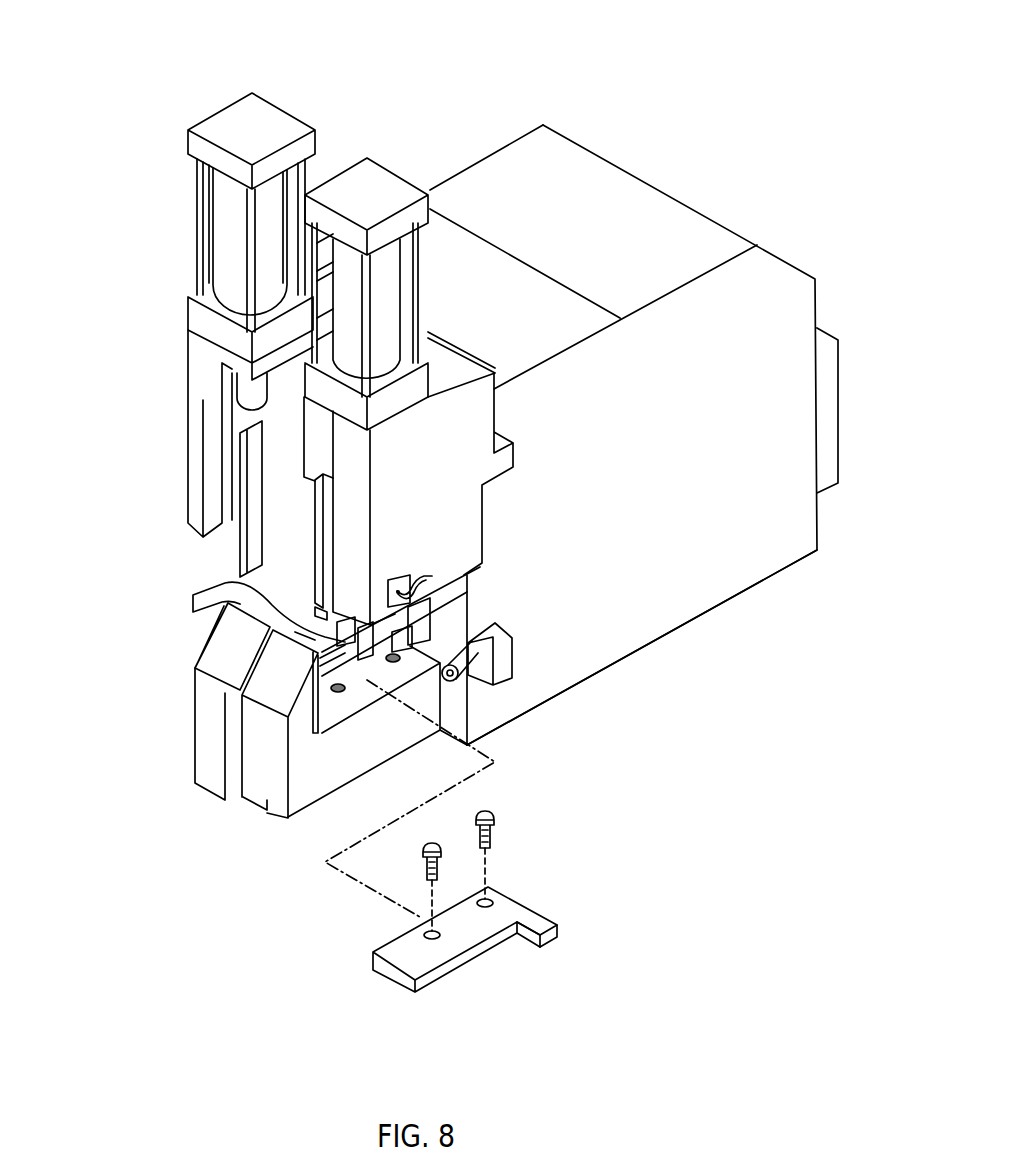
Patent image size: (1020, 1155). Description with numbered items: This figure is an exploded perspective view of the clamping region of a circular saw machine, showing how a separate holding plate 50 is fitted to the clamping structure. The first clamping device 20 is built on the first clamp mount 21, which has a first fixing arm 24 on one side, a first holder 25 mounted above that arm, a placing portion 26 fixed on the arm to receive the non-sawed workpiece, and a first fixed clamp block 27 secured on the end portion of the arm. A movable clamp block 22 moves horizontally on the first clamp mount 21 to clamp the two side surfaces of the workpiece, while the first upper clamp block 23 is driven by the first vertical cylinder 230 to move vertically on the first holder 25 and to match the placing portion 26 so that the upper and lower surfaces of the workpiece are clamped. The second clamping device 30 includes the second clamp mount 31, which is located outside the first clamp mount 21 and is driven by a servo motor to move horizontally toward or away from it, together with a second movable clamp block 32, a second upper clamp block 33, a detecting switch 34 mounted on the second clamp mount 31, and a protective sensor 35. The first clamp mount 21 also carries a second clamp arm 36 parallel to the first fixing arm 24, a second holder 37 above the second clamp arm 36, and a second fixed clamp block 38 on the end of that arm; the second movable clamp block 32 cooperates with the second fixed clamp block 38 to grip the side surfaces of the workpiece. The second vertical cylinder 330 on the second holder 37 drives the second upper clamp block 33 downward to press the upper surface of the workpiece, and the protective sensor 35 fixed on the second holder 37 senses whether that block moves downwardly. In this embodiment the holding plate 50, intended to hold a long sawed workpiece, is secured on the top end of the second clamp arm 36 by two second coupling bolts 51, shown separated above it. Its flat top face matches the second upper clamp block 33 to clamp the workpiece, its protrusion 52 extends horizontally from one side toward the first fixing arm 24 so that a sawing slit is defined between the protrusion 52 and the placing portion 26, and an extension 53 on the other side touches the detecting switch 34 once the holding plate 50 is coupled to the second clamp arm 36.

The first clamping device 20 is at (455, 99).
The first clamp mount 21 is at (665, 225).
The movable clamp block 22 is at (215, 585).
The first upper clamp block 23 is at (247, 486).
The first fixing arm 24 is at (210, 772).
The first holder 25 is at (197, 393).
The placing portion 26 is at (268, 623).
The first fixed clamp block 27 is at (210, 690).
The second clamping device 30 is at (763, 629).
The second clamp mount 31 is at (788, 543).
The second movable clamp block 32 is at (380, 632).
The second upper clamp block 33 is at (320, 568).
The detecting switch 34 is at (510, 650).
The protective sensor 35 is at (420, 572).
The second clamp arm 36 is at (368, 763).
The second holder 37 is at (477, 418).
The second fixed clamp block 38 is at (265, 715).
The holding plate 50 is at (447, 902).
The second coupling bolts 51 is at (477, 815).
The protrusion 52 is at (373, 952).
The extension 53 is at (553, 937).
The first vertical cylinder 230 is at (228, 122).
The second vertical cylinder 330 is at (362, 185).